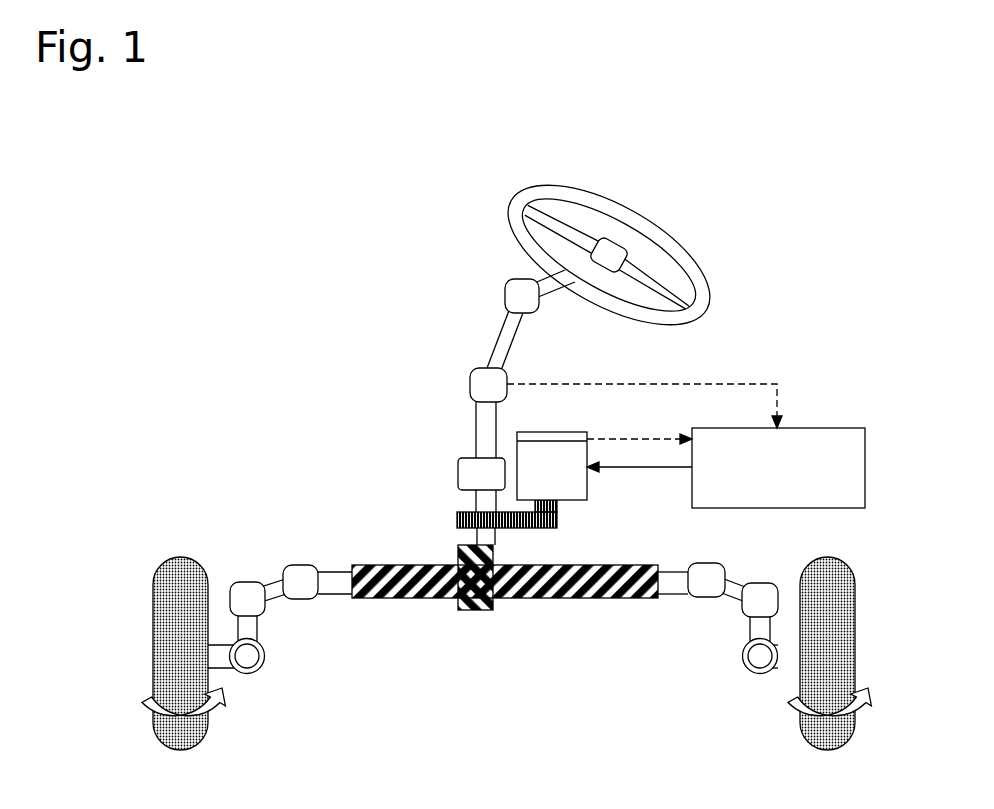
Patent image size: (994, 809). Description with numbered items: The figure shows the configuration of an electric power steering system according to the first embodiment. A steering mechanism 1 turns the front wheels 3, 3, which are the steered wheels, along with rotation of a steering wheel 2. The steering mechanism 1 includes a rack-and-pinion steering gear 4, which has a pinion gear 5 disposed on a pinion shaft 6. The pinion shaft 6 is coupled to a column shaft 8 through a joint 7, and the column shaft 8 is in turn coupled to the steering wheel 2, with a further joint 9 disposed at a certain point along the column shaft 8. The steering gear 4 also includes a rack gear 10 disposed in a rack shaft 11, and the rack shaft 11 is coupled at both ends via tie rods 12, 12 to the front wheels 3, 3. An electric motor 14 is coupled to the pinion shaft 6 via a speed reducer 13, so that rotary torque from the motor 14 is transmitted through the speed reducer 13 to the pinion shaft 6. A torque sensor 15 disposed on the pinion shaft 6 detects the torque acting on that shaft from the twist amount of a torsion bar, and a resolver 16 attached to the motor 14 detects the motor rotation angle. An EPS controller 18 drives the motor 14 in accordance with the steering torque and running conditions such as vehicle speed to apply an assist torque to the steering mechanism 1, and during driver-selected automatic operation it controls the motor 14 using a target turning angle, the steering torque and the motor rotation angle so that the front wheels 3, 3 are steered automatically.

The steering mechanism 1 is at (440, 536).
The steering wheel 2 is at (660, 240).
The front wheels 3 is at (153, 636).
The rack-and-pinion steering gear 4 is at (472, 624).
The pinion gear 5 is at (458, 556).
The pinion shaft 6 is at (457, 516).
The joint 7 is at (470, 389).
The column shaft 8 is at (498, 347).
The joint 9 is at (505, 298).
The rack gear 10 is at (553, 600).
The rack shaft 11 is at (672, 590).
The tie rods 12 is at (278, 588).
The speed reducer 13 is at (575, 521).
The electric motor 14 is at (587, 484).
The torque sensor 15 is at (458, 472).
The resolver 16 is at (575, 432).
The EPS controller 18 is at (845, 428).